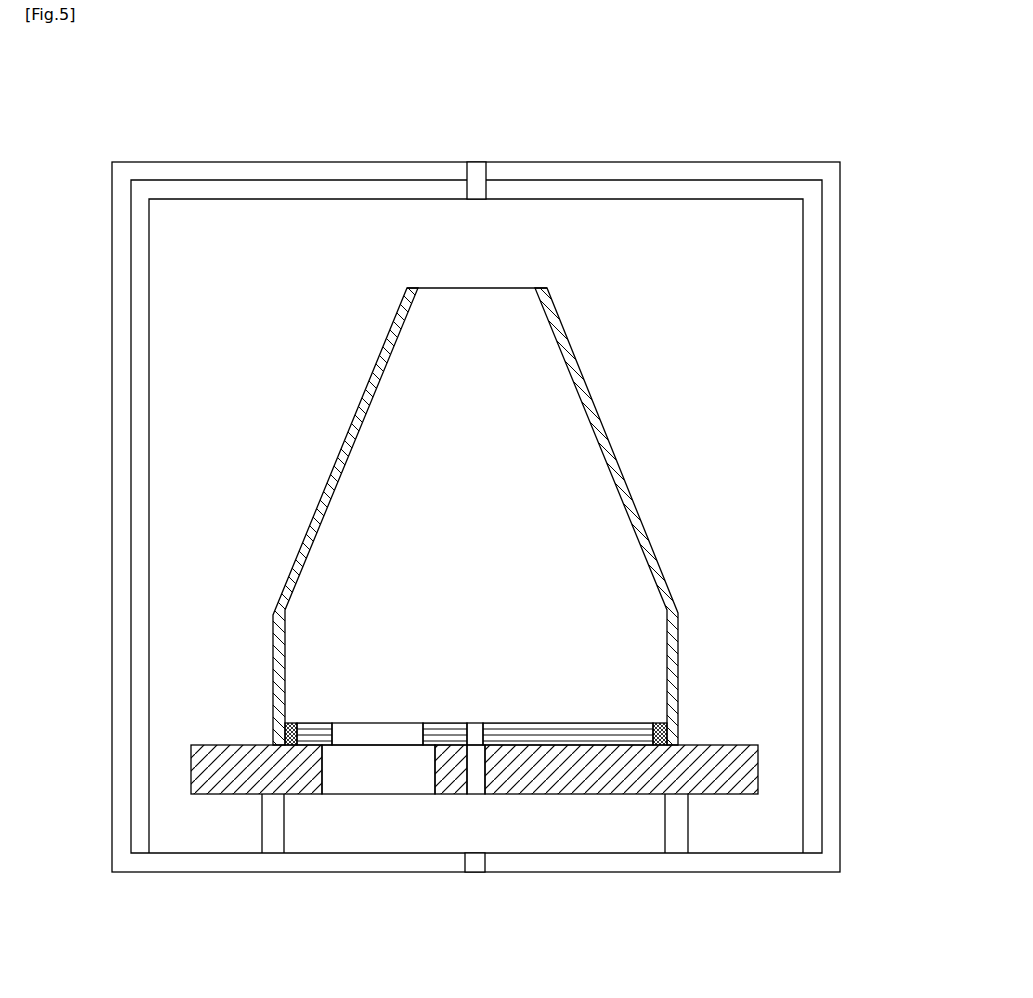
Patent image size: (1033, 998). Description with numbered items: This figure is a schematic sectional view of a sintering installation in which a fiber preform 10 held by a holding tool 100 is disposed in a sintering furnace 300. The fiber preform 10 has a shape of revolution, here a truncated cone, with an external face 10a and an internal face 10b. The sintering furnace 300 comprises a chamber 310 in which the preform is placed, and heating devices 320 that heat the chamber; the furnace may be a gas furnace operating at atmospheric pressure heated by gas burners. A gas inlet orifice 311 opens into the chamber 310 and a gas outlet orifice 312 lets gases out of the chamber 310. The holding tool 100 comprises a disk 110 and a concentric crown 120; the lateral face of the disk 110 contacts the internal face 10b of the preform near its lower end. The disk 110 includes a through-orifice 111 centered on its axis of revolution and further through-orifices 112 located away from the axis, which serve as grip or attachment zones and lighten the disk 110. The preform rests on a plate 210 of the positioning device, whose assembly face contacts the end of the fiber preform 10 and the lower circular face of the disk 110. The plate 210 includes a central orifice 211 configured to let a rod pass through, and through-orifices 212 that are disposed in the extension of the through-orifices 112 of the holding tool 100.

The sintering furnace 300 is at (858, 205).
The chamber 310 is at (775, 357).
The heating devices 320 is at (812, 478).
The gas outlet orifice 312 is at (477, 172).
The gas inlet orifice 311 is at (477, 862).
The fiber preform 10 is at (488, 516).
The external face 10a is at (386, 340).
The internal face 10b is at (365, 395).
The disk 110 is at (300, 730).
The through-orifice 111 is at (477, 738).
The through-orifice 112 is at (375, 732).
The crown 120 is at (280, 733).
The holding tool 100 is at (494, 851).
The plate 210 is at (590, 782).
The central orifice 211 is at (475, 778).
The through-orifice 212 is at (378, 770).